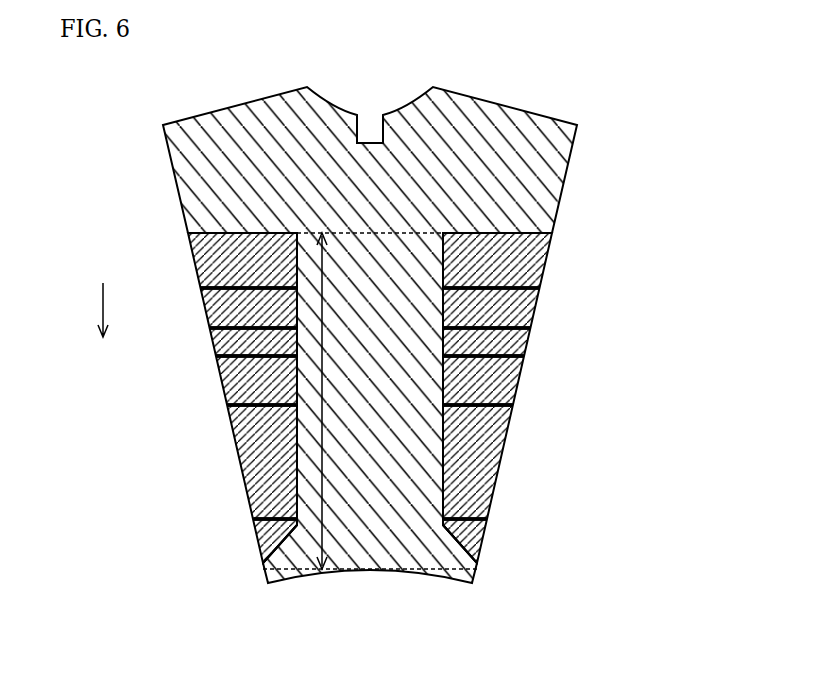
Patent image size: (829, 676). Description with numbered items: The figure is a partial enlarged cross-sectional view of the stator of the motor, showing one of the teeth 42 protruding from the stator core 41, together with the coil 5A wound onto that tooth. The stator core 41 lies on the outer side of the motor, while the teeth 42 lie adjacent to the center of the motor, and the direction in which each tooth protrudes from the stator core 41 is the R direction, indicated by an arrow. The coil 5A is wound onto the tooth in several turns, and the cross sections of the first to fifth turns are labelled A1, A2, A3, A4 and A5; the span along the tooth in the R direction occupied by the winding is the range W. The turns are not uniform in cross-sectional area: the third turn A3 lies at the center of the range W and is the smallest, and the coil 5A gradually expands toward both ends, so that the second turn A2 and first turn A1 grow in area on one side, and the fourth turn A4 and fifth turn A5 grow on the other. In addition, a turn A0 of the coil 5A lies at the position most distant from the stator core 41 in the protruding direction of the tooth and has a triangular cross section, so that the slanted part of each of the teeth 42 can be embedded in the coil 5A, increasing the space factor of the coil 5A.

The stator core 41 is at (552, 173).
The teeth 42 is at (422, 556).
The coil 5A is at (603, 237).
The turn A0 of coil A0 is at (393, 541).
The first turn of coil A1 is at (389, 462).
The second turn of coil A2 is at (397, 380).
The third turn of coil A3 is at (399, 343).
The fourth turn of coil A4 is at (398, 308).
The fifth turn of coil A5 is at (395, 260).
The range W is at (370, 401).
The R direction R is at (106, 328).